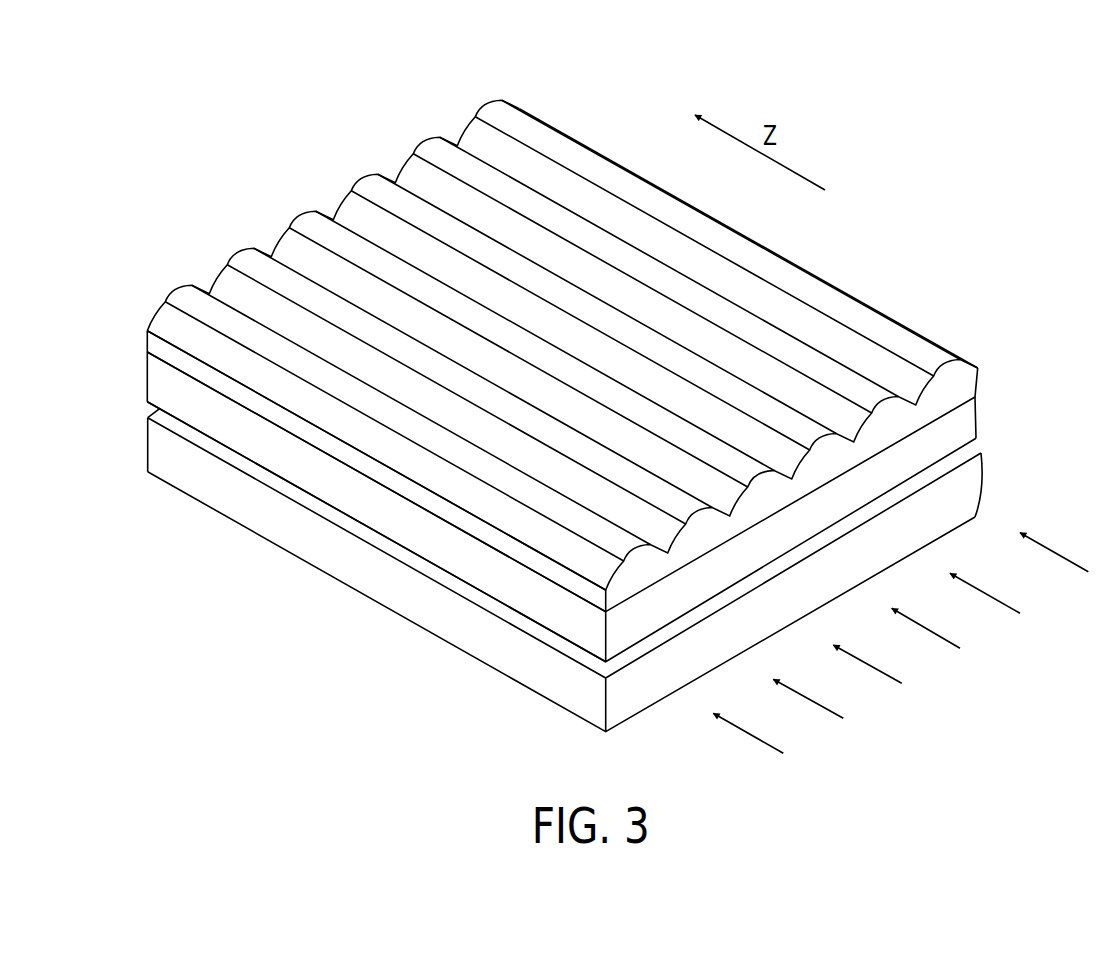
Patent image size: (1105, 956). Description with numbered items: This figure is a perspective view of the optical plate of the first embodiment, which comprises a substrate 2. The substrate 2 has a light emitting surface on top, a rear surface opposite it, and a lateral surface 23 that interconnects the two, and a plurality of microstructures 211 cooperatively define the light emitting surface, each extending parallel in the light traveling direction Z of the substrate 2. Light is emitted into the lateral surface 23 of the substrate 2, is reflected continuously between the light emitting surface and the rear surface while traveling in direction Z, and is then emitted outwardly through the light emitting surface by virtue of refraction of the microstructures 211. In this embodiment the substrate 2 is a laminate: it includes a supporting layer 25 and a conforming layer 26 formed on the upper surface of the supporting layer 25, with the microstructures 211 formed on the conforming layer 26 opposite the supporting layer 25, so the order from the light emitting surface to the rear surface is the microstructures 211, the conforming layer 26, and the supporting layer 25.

The substrate 2 is at (571, 374).
The microstructures 211 is at (822, 450).
The lateral surface 23 is at (965, 482).
The supporting layer 25 is at (432, 552).
The conforming layer 26 is at (385, 478).